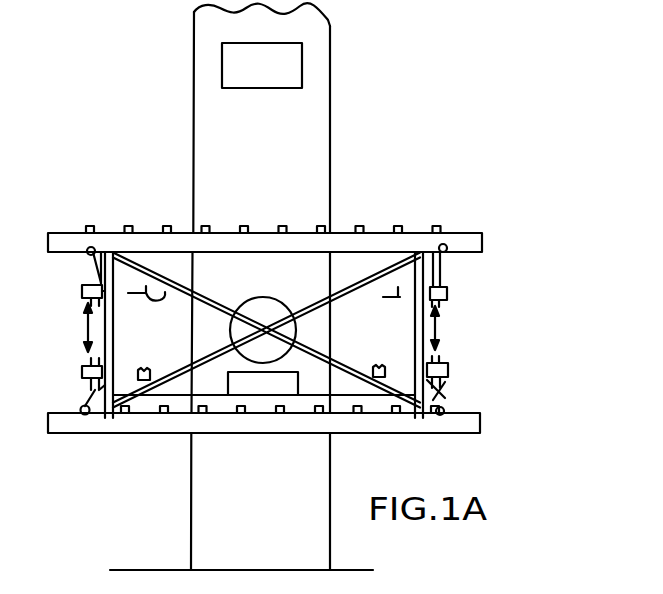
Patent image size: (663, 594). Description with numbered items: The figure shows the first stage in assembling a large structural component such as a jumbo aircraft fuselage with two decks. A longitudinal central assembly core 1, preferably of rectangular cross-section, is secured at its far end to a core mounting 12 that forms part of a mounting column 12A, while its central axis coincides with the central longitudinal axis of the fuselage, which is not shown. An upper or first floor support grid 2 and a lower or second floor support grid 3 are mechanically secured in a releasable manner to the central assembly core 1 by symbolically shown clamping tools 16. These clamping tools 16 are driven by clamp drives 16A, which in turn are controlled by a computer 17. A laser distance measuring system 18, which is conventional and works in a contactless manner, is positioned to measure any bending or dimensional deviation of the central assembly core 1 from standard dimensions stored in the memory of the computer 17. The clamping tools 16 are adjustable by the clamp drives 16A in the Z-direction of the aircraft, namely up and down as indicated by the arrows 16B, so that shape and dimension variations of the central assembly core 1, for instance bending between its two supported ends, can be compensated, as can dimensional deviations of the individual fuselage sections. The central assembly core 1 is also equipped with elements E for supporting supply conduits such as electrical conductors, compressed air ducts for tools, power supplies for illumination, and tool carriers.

The central assembly core 1 is at (410, 346).
The first floor support grid 2 is at (125, 247).
The second floor support grid 3 is at (138, 425).
The core mounting 12 is at (272, 298).
The mounting column 12A is at (306, 163).
The clamping tool 16 is at (92, 252).
The clamp drive 16A is at (82, 368).
The arrows 16B is at (84, 328).
The computer 17 is at (272, 383).
The laser distance measuring system 18 is at (288, 63).
The elements E is at (180, 290).